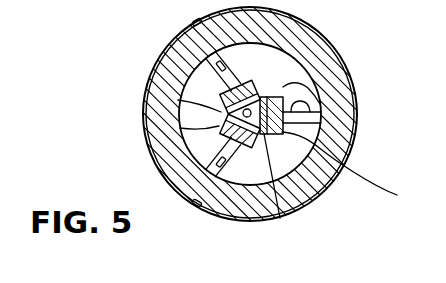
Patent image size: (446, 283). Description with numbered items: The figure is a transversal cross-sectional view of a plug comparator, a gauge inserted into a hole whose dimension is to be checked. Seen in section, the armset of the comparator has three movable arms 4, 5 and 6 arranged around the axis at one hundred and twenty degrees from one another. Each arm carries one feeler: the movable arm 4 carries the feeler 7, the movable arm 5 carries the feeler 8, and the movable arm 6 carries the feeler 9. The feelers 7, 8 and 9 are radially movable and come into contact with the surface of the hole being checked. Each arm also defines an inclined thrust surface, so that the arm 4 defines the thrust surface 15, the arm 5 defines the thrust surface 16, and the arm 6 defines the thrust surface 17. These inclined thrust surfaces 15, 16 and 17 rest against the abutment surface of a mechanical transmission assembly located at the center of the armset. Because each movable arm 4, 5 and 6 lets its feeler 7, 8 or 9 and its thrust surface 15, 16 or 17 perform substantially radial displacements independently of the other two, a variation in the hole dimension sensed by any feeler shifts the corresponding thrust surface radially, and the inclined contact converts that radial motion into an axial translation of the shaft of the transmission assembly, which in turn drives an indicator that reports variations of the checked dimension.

The movable arm 4 is at (246, 144).
The movable arm 5 is at (161, 53).
The movable arm 6 is at (348, 171).
The feeler 7 is at (238, 176).
The feeler 8 is at (168, 46).
The feeler 9 is at (355, 150).
The inclined thrust surface 15 is at (301, 207).
The inclined thrust surface 16 is at (146, 79).
The inclined thrust surface 17 is at (357, 138).